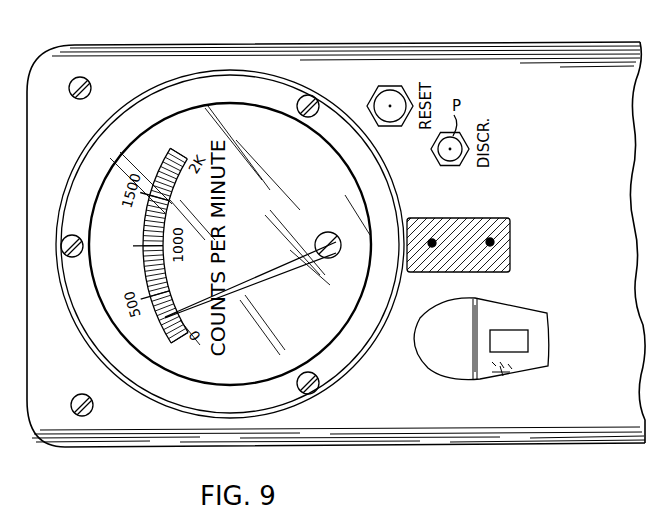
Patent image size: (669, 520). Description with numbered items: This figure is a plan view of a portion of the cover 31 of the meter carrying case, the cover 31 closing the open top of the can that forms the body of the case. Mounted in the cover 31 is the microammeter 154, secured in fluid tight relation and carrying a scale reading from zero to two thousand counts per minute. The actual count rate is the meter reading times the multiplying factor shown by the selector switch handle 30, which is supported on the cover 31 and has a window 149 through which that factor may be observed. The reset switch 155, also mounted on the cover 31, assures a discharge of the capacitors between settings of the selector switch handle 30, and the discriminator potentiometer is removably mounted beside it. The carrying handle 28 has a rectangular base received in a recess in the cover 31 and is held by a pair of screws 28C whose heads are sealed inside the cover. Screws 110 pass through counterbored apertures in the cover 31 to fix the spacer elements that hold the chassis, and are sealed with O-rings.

The cover 31 is at (567, 30).
The screws 110 is at (90, 82).
The microammeter 154 is at (280, 118).
The reset switch 155 is at (375, 102).
The handle 28 is at (433, 240).
The screws 28C is at (490, 240).
The selector switch handle 30 is at (503, 313).
The window 149 is at (520, 332).